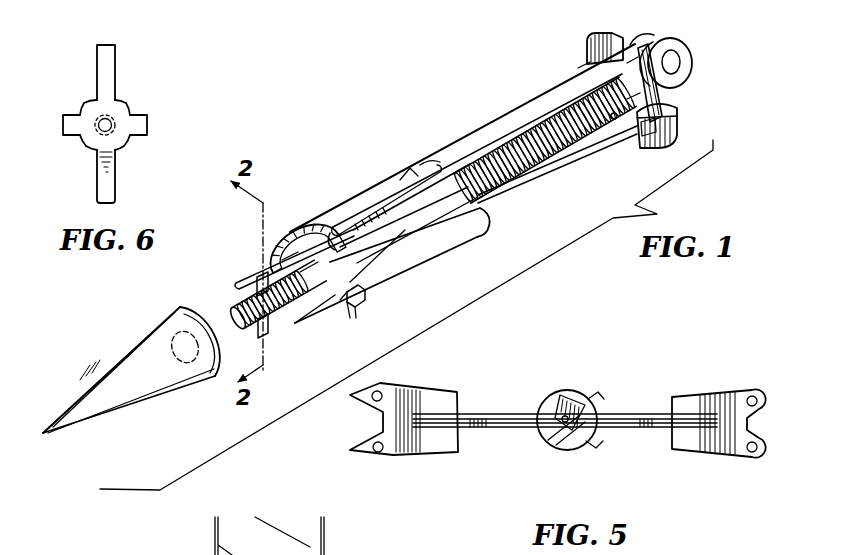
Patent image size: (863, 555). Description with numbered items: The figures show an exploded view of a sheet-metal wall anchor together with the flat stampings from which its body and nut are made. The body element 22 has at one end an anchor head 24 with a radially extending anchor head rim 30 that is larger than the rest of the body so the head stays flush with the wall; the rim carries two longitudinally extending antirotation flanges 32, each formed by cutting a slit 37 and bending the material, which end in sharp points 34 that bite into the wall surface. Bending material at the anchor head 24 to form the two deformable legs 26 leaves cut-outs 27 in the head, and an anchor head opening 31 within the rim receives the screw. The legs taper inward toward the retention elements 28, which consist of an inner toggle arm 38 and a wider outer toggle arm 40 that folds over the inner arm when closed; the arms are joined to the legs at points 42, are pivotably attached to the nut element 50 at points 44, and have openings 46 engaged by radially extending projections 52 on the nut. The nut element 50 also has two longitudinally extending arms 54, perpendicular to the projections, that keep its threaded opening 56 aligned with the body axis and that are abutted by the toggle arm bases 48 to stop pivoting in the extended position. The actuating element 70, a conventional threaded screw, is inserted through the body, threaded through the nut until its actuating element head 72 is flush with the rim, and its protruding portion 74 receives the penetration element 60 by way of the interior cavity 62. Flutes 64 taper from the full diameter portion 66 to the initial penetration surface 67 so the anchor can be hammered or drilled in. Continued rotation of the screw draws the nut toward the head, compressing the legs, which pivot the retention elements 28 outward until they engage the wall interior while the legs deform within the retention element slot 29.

In FIG. 1, the body element 22 is at (500, 122).
In FIG. 5, the body element 22 is at (603, 388).
In FIG. 1, the anchor head 24 is at (615, 99).
In FIG. 5, the anchor head 24 is at (572, 419).
In FIG. 1, the deformable legs 26 is at (482, 153).
In FIG. 5, the deformable legs 26 is at (473, 418).
In FIG. 1, the cut-outs 27 is at (640, 40).
In FIG. 1, the retention elements 28 is at (343, 196).
In FIG. 1, the retention element slot 29 is at (413, 168).
In FIG. 5, the retention element slot 29 is at (450, 410).
In FIG. 1, the anchor head rim 30 is at (612, 35).
In FIG. 1, the anchor head opening 31 is at (613, 119).
In FIG. 5, the anchor head opening 31 is at (553, 437).
In FIG. 1, the antirotation flanges 32 is at (587, 62).
In FIG. 5, the antirotation flanges 32 is at (558, 387).
In FIG. 1, the sharp points 34 is at (587, 70).
In FIG. 5, the sharp points 34 is at (577, 397).
In FIG. 5, the slit 37 is at (590, 400).
In FIG. 1, the inner toggle arm 38 is at (393, 183).
In FIG. 5, the inner toggle arm 38 is at (728, 398).
In FIG. 1, the outer toggle arm 40 is at (400, 277).
In FIG. 5, the outer toggle arm 40 is at (420, 395).
In FIG. 1, the attachment points 42 is at (325, 230).
In FIG. 1, the attachment points 44 is at (350, 303).
In FIG. 1, the openings 46 is at (360, 303).
In FIG. 5, the openings 46 is at (381, 393).
In FIG. 1, the toggle arm bases 48 is at (315, 228).
In FIG. 6, the nut element 50 is at (117, 124).
In FIG. 6, the projections 52 is at (138, 123).
In FIG. 1, the projections 52 is at (365, 298).
In FIG. 6, the longitudinally extending arms 54 is at (110, 60).
In FIG. 1, the longitudinally extending arms 54 is at (268, 248).
In FIG. 6, the threaded opening 56 is at (113, 120).
In FIG. 1, the penetration element 60 is at (121, 369).
In FIG. 1, the interior cavity 62 is at (193, 333).
In FIG. 1, the flutes 64 is at (97, 370).
In FIG. 1, the full diameter portion 66 is at (165, 322).
In FIG. 1, the initial penetration surface 67 is at (45, 423).
In FIG. 1, the actuating element 70 is at (694, 56).
In FIG. 1, the actuating element head 72 is at (684, 52).
In FIG. 1, the protruding portion 74 is at (238, 312).